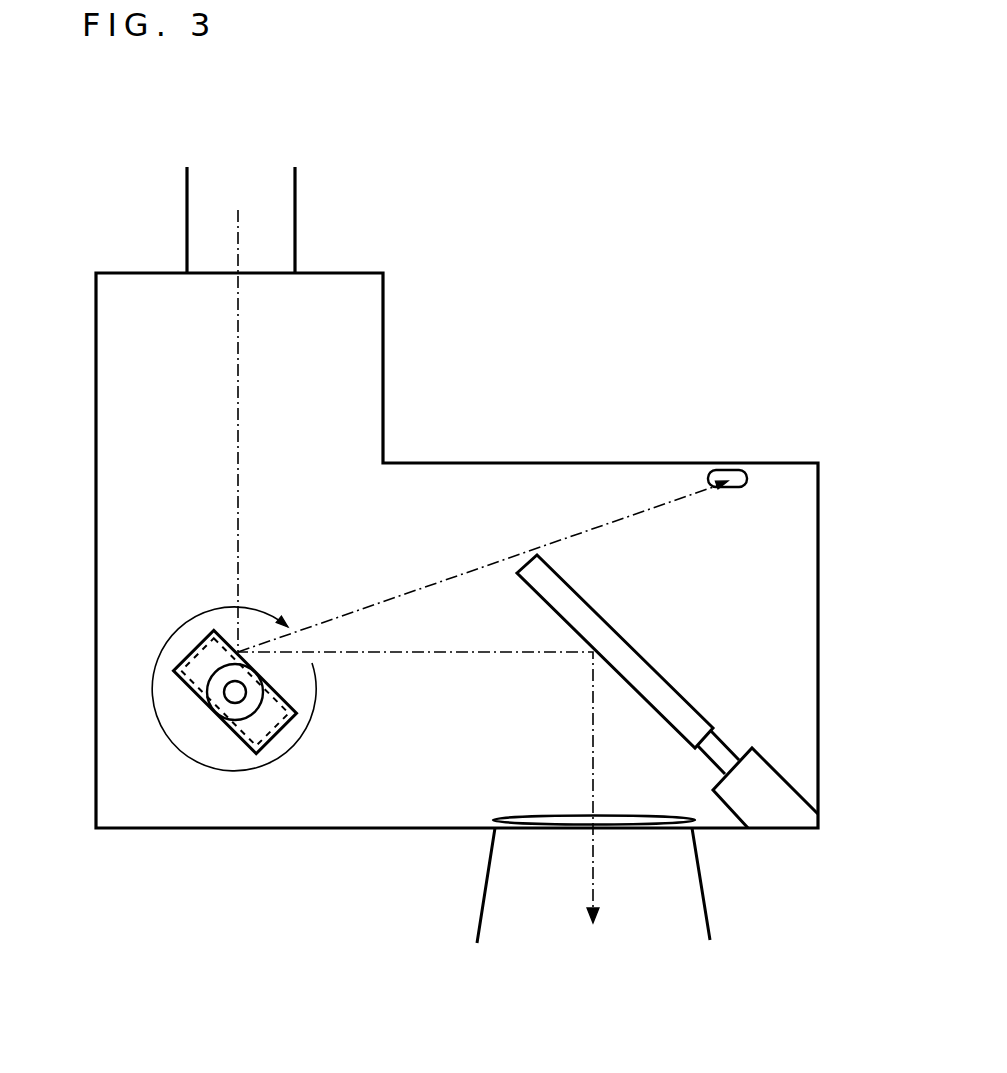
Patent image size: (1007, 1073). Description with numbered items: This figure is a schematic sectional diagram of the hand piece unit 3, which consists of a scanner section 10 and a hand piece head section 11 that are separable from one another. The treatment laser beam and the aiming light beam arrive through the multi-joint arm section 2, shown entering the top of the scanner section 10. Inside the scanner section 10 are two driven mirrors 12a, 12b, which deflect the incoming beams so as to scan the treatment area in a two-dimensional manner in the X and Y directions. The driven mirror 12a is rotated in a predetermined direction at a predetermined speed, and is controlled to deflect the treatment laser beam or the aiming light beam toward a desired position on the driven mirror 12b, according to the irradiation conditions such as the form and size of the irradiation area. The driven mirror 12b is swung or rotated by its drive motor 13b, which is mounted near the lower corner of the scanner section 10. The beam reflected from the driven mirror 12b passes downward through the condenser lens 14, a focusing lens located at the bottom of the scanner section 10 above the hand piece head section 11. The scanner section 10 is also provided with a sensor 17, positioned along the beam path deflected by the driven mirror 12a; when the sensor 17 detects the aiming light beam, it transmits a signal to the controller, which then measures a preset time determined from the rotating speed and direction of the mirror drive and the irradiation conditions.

The multi-joint arm section 2 is at (285, 213).
The hand piece unit 3 is at (576, 280).
The scanner section 10 is at (127, 458).
The hand piece head section 11 is at (672, 915).
The driven mirror 12a is at (200, 673).
The driven mirror 12b is at (630, 657).
The drive motor 13b is at (783, 792).
The condenser lens 14 is at (533, 816).
The sensor 17 is at (733, 477).